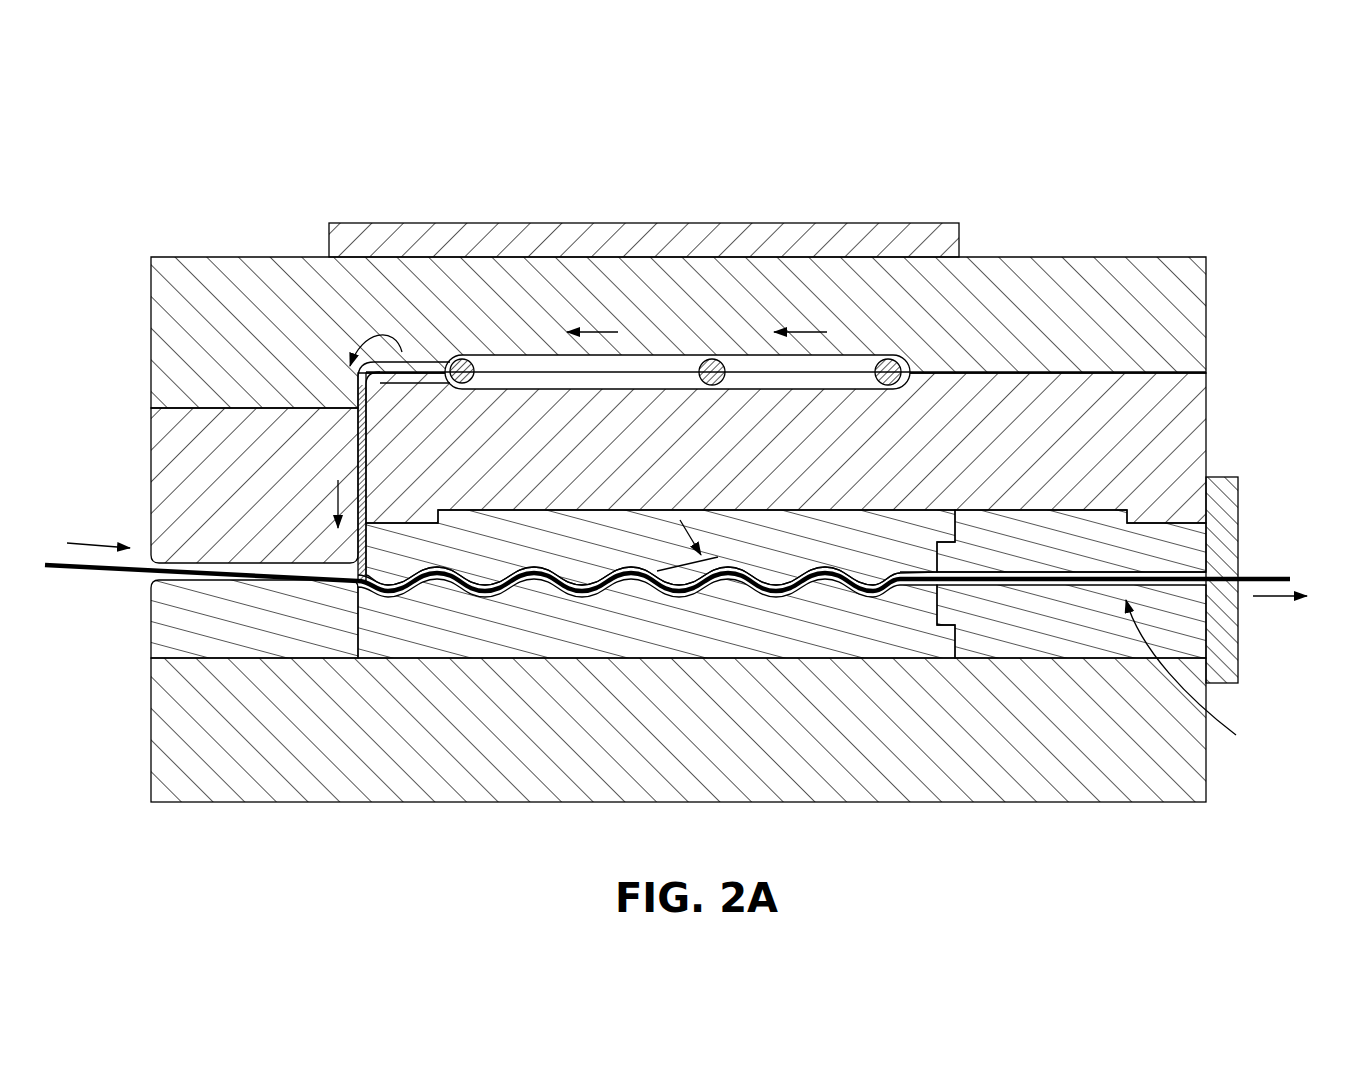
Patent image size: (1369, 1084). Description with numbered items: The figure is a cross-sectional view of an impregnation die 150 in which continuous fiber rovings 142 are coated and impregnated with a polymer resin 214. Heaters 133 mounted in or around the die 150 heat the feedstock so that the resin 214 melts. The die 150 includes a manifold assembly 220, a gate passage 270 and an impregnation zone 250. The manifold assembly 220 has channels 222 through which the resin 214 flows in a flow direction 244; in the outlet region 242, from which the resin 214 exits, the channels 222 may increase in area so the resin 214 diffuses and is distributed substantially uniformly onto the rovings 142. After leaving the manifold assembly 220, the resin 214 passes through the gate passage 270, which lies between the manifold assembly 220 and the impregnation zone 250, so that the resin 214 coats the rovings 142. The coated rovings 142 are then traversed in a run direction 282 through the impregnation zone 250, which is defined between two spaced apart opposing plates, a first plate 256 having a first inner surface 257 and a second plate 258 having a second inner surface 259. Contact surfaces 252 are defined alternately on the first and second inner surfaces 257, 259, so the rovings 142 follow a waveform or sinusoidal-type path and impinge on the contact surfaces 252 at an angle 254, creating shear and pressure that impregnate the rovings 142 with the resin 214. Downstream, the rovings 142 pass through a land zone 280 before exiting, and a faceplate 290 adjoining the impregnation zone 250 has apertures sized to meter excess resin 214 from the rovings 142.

The impregnation die 150 is at (1026, 183).
The heaters 133 is at (485, 223).
The resin 214 is at (360, 423).
The channel 222 is at (455, 357).
The outlet region 242 is at (403, 352).
The flow direction 244 is at (598, 330).
The manifold assembly 220 is at (690, 345).
The gate passage 270 is at (374, 451).
The first plate 256 is at (786, 448).
The first inner surface 257 is at (905, 570).
The second plate 258 is at (857, 630).
The second inner surface 259 is at (898, 590).
The impregnation zone 250 is at (557, 600).
The contact surfaces 252 is at (481, 576).
The angle 254 is at (682, 522).
The continuous fiber rovings 142 is at (123, 577).
The run direction 282 is at (1292, 632).
The faceplate 290 is at (1240, 498).
The land zone 280 is at (1210, 674).